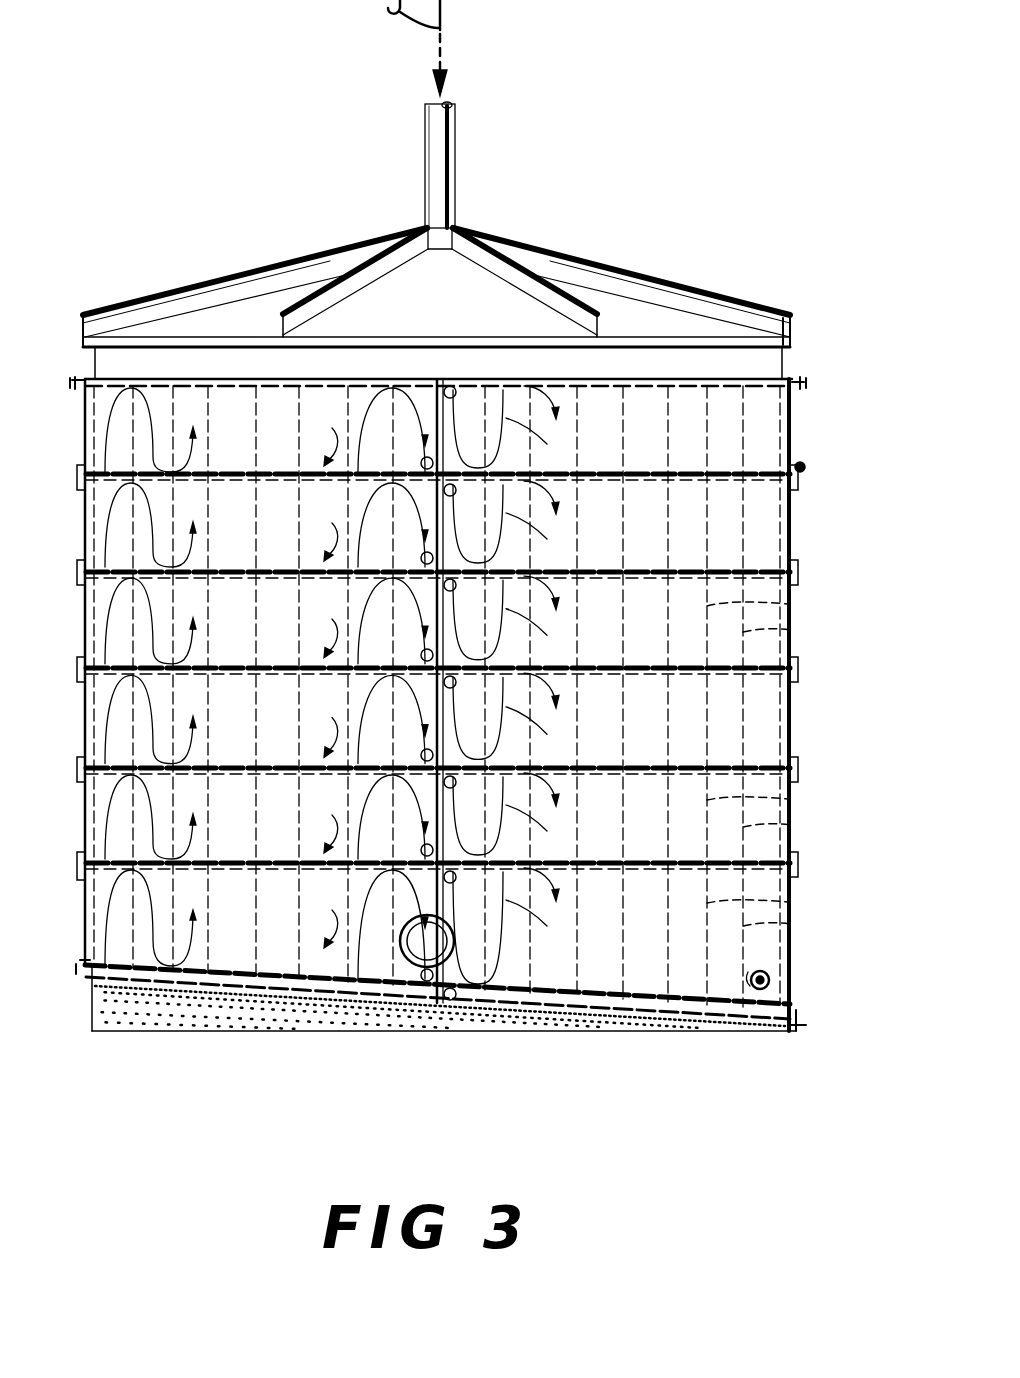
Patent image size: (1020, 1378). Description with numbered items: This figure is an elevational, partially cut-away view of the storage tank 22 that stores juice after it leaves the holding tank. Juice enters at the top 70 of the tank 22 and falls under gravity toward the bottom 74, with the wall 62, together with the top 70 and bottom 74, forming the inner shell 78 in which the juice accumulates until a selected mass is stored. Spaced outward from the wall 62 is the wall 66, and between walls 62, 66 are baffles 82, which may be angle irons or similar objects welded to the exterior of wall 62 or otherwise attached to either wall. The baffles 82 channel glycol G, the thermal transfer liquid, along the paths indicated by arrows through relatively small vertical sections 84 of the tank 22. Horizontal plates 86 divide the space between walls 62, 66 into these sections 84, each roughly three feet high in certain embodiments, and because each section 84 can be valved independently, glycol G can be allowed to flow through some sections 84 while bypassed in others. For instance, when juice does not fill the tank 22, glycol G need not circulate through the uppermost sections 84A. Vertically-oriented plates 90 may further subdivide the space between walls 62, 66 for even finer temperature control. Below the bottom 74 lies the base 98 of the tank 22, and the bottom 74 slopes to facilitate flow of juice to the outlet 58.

The storage tank 22 is at (208, 200).
The top 70 is at (600, 298).
The inner shell 78 is at (792, 350).
The wall 62 is at (792, 366).
The vertically-oriented plates 90 is at (790, 438).
The horizontal plates 86 is at (748, 472).
The wall 66 is at (790, 548).
The baffles 82 is at (752, 638).
The uppermost sections 84A is at (272, 439).
The vertical sections 84 is at (247, 550).
The outlet 58 is at (770, 978).
The bottom 74 is at (228, 988).
The base 98 is at (311, 1032).
The glycol G is at (108, 446).